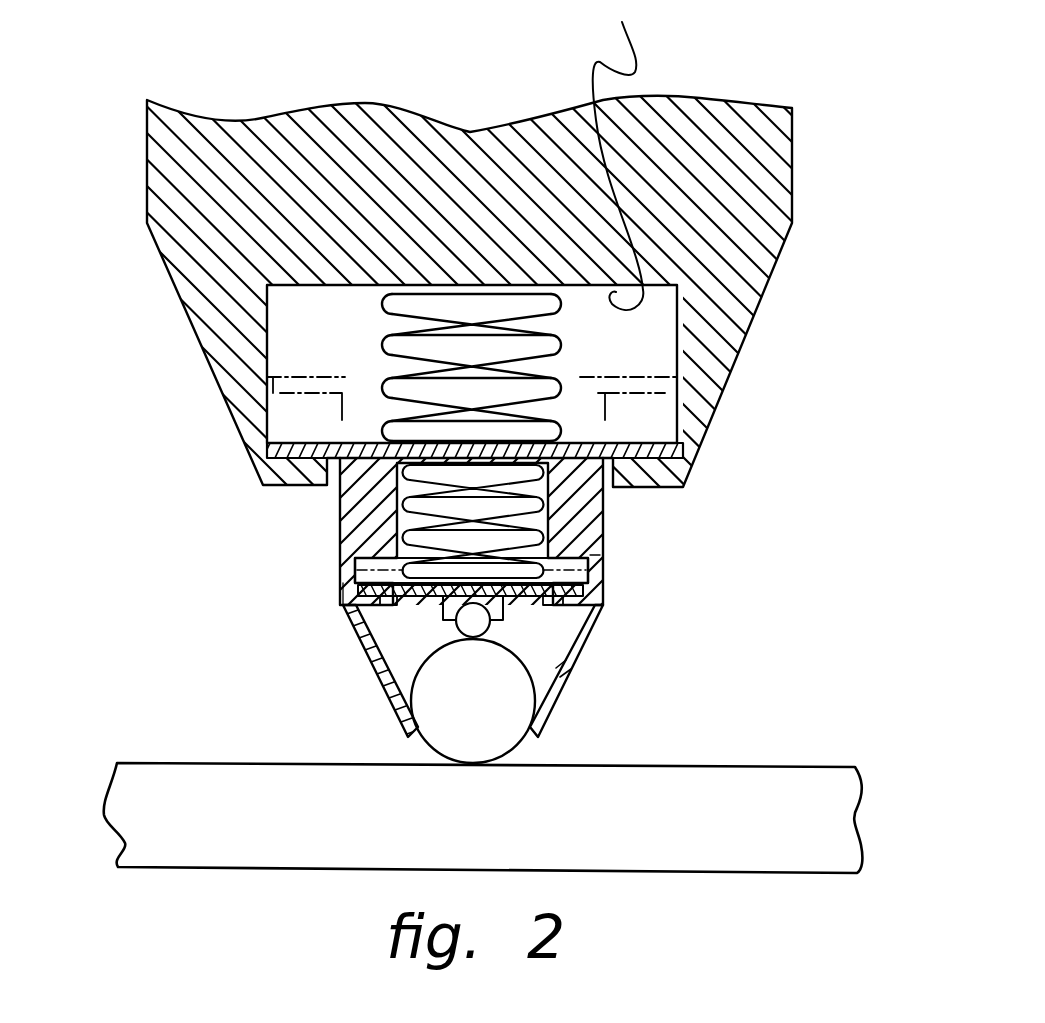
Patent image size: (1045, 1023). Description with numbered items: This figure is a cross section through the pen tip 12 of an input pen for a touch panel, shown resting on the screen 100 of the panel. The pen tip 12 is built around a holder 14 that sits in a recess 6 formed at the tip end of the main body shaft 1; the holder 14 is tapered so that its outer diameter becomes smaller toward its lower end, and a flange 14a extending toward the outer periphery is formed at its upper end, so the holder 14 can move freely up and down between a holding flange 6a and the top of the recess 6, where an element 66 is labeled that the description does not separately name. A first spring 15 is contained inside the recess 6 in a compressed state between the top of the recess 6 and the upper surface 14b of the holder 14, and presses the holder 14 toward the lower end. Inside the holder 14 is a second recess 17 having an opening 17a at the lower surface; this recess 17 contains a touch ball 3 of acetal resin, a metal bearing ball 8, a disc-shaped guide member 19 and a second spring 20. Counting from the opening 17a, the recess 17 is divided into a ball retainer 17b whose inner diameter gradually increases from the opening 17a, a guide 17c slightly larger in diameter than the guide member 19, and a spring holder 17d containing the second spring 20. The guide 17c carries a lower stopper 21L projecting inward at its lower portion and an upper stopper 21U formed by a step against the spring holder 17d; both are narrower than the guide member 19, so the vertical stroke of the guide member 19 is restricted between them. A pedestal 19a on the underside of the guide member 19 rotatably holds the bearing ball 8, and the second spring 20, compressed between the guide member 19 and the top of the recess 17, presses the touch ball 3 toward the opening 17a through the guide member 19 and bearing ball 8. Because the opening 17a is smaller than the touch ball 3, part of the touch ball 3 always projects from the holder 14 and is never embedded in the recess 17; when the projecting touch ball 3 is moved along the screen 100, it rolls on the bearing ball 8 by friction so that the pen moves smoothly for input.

The main body shaft 1 is at (778, 268).
The recess 6 is at (668, 343).
The passage 66 is at (618, 155).
The first spring 15 is at (380, 350).
The upper surface 14b is at (583, 442).
The flange 14a is at (690, 432).
The holder 14 is at (604, 637).
The holding flange 6a is at (677, 487).
The second spring 20 is at (345, 518).
The spring holder 17d is at (604, 514).
The upper stopper 21U is at (612, 556).
The guide 17c is at (612, 573).
The lower stopper 21L is at (604, 614).
The guide member 19 is at (353, 587).
The pedestal 19a is at (442, 616).
The bearing ball 8 is at (489, 626).
The touch ball 3 is at (443, 747).
The recess 17 is at (392, 670).
The ball retainer 17b is at (550, 667).
The opening 17a is at (543, 737).
The screen 100 is at (770, 766).
The pen tip 12 is at (185, 625).